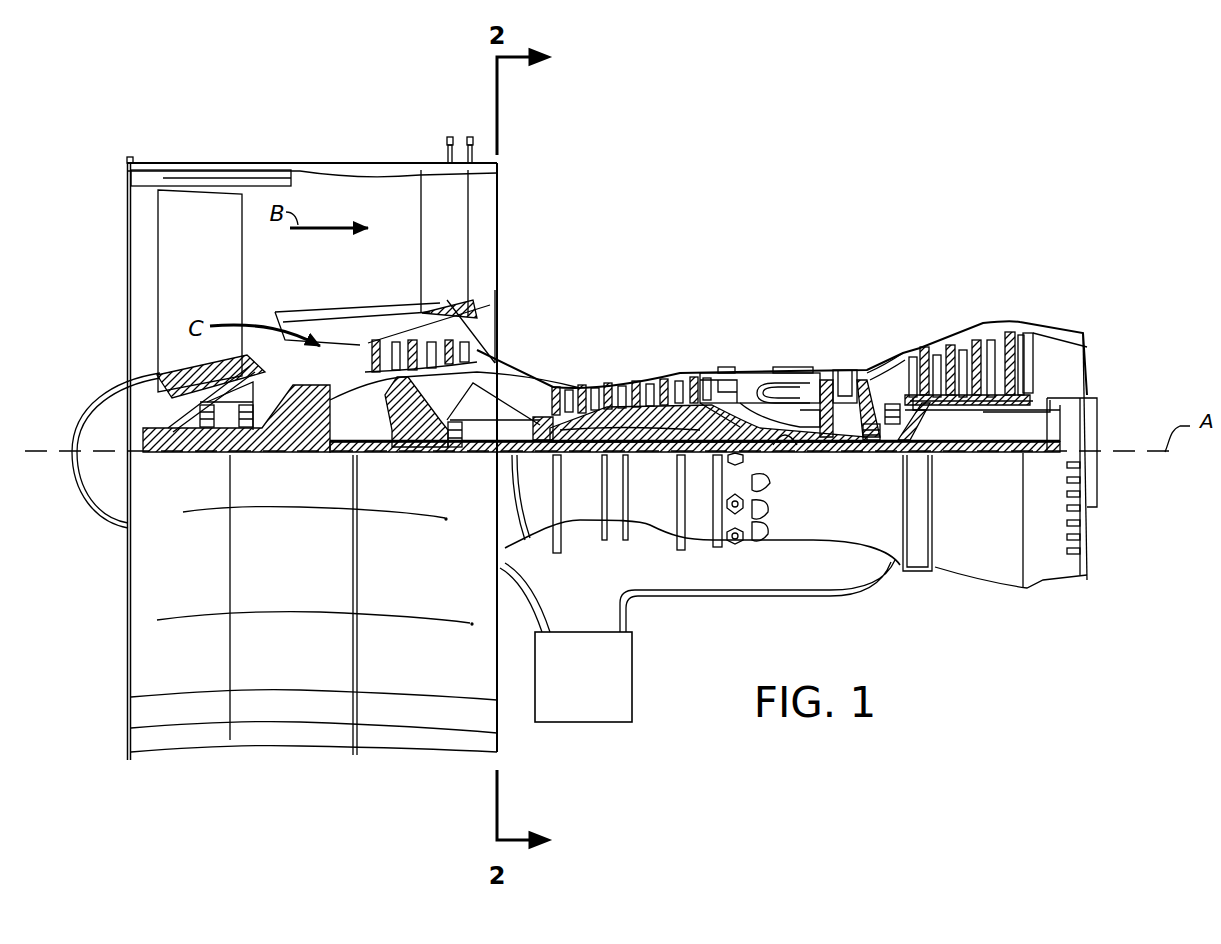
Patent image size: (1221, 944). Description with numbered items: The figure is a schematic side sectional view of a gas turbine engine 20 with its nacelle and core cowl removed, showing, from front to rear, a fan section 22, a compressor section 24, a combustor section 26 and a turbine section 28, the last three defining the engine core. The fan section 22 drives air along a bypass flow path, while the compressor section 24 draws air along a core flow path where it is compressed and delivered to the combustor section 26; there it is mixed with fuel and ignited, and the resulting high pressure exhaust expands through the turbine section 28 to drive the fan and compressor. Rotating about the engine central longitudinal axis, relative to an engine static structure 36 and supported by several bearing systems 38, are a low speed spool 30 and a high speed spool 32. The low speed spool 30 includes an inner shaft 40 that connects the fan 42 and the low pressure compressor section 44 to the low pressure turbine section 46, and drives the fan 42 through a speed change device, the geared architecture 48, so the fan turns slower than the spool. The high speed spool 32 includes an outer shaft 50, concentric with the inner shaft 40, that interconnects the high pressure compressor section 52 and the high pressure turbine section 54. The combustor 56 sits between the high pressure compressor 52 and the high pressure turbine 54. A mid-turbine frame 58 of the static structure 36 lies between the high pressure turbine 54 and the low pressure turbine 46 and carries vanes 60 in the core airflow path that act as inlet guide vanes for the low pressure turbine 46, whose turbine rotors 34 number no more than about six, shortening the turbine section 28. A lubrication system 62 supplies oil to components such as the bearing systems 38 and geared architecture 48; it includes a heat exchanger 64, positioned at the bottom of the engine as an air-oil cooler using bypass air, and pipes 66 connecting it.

The gas turbine engine 20 is at (940, 176).
The fan section 22 is at (335, 137).
The compressor section 24 is at (360, 264).
The combustor section 26 is at (768, 264).
The turbine section 28 is at (823, 264).
The low speed spool 30 is at (652, 470).
The high speed spool 32 is at (686, 425).
The turbine rotors 34 is at (983, 416).
The engine static structure 36 is at (703, 560).
The bearing systems 38 is at (207, 456).
The inner shaft 40 is at (538, 588).
The fan 42 is at (185, 260).
The low pressure compressor section 44 is at (430, 357).
The low pressure turbine section 46 is at (975, 352).
The geared architecture 48 is at (317, 456).
The outer shaft 50 is at (783, 444).
The high pressure compressor section 52 is at (612, 405).
The high pressure turbine section 54 is at (842, 376).
The combustor 56 is at (778, 392).
The mid-turbine frame 58 is at (882, 355).
The vanes 60 is at (898, 395).
The lubrication system 62 is at (638, 728).
The heat exchanger 64 is at (633, 678).
The pipes 66 is at (743, 603).